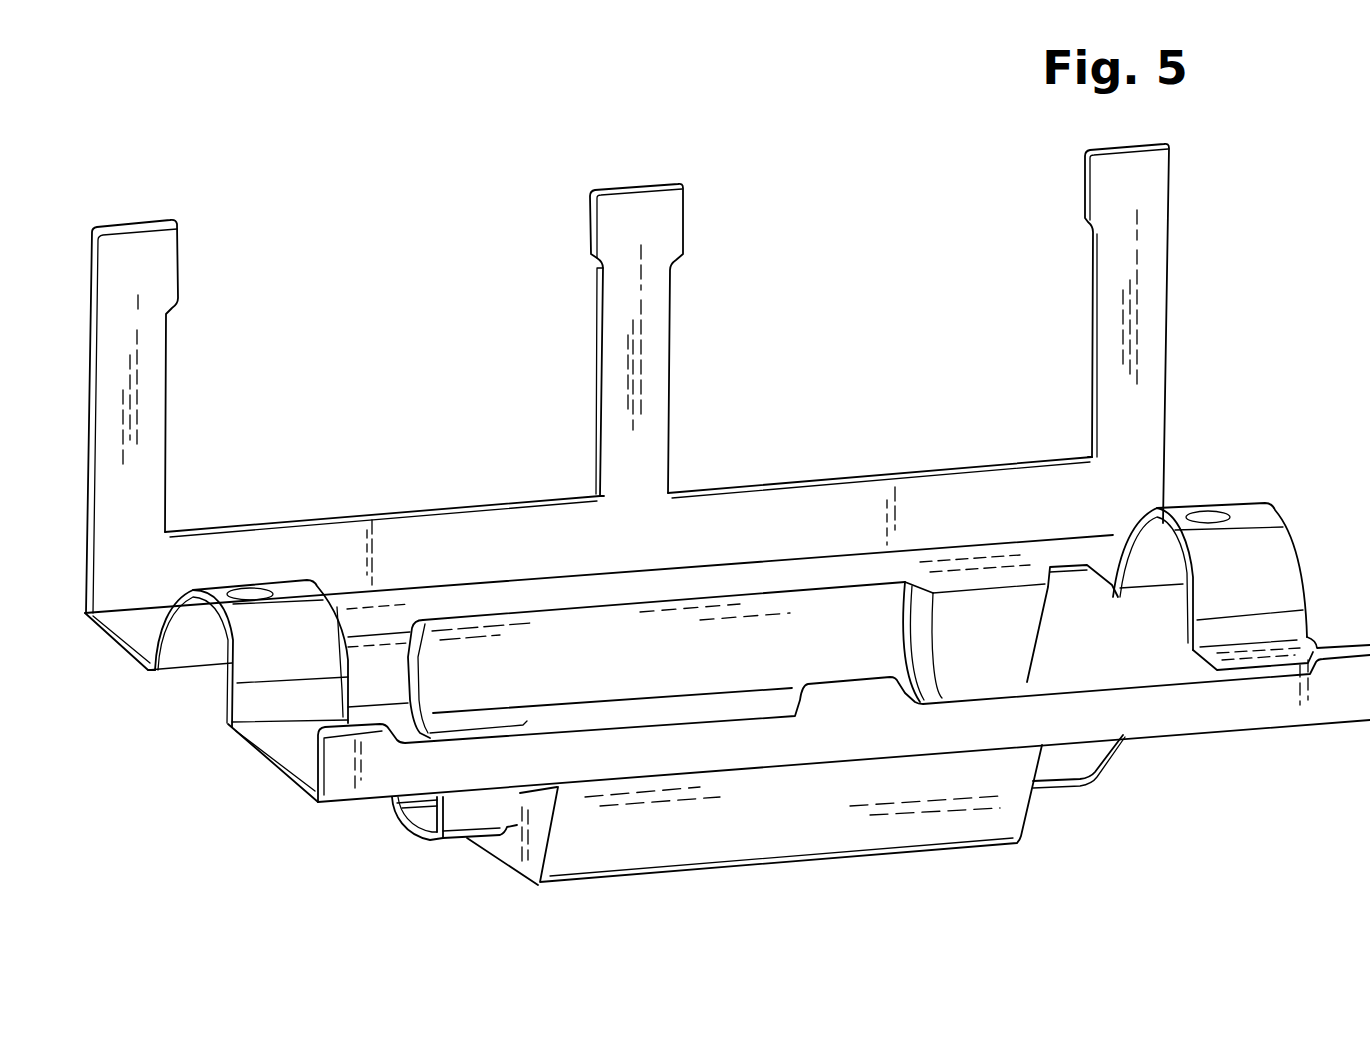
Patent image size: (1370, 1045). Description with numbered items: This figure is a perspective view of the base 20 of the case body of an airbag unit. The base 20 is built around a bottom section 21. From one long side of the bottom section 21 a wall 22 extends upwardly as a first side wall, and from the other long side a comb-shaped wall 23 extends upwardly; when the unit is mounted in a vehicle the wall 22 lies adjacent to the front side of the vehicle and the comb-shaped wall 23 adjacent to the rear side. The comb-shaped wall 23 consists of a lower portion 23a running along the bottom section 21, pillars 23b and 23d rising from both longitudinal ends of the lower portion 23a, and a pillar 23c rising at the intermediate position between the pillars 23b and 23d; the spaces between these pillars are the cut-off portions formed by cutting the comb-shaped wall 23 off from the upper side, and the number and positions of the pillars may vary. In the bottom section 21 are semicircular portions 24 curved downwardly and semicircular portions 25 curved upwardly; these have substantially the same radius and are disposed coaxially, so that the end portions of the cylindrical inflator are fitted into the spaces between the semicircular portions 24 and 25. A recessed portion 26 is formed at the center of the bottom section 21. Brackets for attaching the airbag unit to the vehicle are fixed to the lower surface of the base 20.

The base 20 is at (254, 805).
The bottom section 21 is at (112, 647).
The wall 22 is at (808, 739).
The comb-shaped wall 23 is at (390, 482).
The lower portion 23a is at (787, 515).
The pillar 23b is at (1166, 277).
The pillar 23c is at (657, 318).
The pillar 23d is at (165, 327).
The semicircular portion 24 is at (465, 817).
The semicircular portion 25 is at (293, 588).
The recessed portion 26 is at (574, 667).